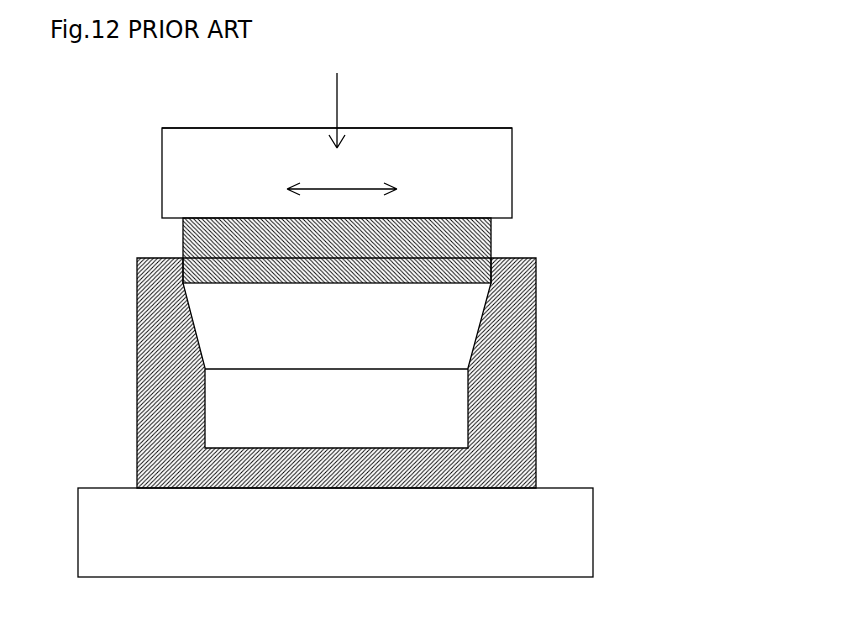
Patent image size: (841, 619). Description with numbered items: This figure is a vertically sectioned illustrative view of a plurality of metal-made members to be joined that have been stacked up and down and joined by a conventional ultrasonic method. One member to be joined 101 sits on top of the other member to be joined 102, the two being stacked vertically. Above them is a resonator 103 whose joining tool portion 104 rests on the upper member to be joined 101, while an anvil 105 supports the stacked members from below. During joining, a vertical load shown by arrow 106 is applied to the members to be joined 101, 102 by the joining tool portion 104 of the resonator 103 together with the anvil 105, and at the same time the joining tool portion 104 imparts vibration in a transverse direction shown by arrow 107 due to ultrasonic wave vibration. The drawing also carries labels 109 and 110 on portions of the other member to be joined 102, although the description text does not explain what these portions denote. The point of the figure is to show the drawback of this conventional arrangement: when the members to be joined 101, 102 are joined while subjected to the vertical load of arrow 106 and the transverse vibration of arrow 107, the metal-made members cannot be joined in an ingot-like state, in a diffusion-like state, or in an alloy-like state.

The one member to be joined 101 is at (183, 243).
The other member to be joined 102 is at (135, 383).
The resonator 103 is at (480, 128).
The joining tool portion 104 is at (497, 153).
The anvil 105 is at (580, 548).
The arrow showing vertical load 106 is at (337, 90).
The arrow showing vibration in transverse direction 107 is at (365, 186).
The die upper portion 109 is at (492, 277).
The die tapered portion 110 is at (473, 352).